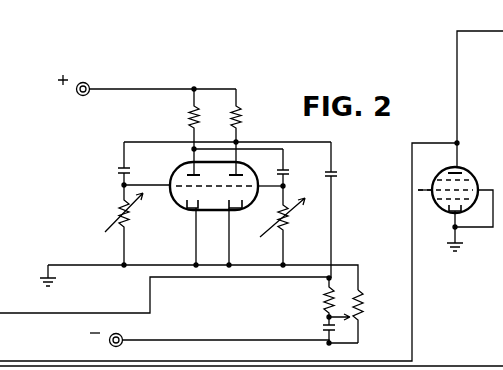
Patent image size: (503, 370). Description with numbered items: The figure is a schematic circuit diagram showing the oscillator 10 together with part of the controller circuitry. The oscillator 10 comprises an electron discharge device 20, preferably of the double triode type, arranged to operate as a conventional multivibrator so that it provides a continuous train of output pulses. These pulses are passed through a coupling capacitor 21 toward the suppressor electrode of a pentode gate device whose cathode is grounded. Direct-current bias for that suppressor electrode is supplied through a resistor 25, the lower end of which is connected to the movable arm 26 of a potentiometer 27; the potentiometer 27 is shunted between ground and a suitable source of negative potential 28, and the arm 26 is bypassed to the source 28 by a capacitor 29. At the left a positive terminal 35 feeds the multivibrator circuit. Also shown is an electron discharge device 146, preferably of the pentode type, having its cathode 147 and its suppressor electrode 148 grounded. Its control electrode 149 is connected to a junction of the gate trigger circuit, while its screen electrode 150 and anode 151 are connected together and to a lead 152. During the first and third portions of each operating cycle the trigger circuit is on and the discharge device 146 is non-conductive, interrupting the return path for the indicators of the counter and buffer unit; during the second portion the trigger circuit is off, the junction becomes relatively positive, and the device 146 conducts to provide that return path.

The oscillator 10 is at (271, 130).
The electron discharge device 20 is at (170, 178).
The coupling capacitor 21 is at (337, 173).
The resistor 25 is at (325, 296).
The movable arm 26 is at (338, 313).
The potentiometer 27 is at (362, 312).
The source of negative potential 28 is at (122, 334).
The capacitor 29 is at (325, 330).
The positive terminal 35 is at (88, 84).
The electron discharge device 146 is at (418, 191).
The cathode 147 is at (450, 210).
The suppressor electrode 148 is at (474, 176).
The control electrode 149 is at (445, 203).
The screen electrode 150 is at (445, 184).
The anode 151 is at (463, 171).
The lead 152 is at (457, 31).